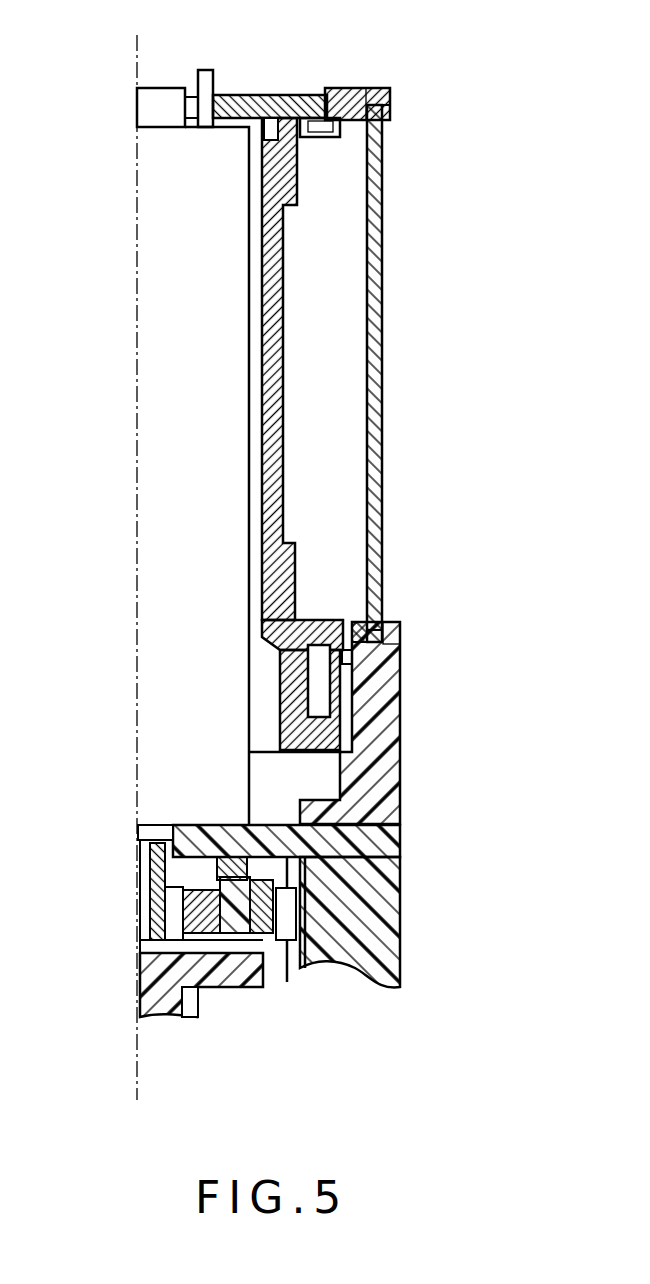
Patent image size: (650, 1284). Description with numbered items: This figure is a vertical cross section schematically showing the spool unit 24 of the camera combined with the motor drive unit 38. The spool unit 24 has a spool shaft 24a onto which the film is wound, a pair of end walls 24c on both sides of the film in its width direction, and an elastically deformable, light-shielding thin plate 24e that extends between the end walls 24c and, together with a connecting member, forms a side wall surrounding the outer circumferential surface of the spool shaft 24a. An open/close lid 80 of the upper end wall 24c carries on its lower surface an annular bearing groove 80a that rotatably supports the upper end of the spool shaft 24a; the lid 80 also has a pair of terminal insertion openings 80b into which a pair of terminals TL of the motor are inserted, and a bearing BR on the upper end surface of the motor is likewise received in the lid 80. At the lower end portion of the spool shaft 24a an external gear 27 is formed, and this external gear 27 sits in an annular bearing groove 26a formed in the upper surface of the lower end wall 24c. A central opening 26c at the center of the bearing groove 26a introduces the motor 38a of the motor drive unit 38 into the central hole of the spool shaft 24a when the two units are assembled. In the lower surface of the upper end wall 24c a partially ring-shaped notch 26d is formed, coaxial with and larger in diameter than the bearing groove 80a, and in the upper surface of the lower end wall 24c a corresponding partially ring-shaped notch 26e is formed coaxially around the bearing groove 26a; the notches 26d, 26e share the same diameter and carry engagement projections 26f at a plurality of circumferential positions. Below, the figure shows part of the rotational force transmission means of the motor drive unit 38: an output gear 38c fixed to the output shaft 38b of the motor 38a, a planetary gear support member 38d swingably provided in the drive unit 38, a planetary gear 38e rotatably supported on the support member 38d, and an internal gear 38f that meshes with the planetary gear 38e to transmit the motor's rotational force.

The terminals TL is at (201, 95).
The bearing BR is at (157, 88).
The open/close lid 80 is at (273, 94).
The annular bearing groove 80a is at (314, 134).
The terminal insertion openings 80b is at (220, 96).
The partially ring-shaped notch 26d is at (355, 88).
The end walls 24c is at (378, 92).
The engagement projections 26f is at (391, 112).
The motor 38a is at (148, 283).
The spool shaft 24a is at (284, 292).
The thin plate 24e is at (380, 368).
The partially ring-shaped notch 26e is at (352, 638).
The annular bearing groove 26a is at (386, 645).
The external gear 27 is at (352, 664).
The spool unit 24 is at (417, 728).
The central opening 26c is at (290, 722).
The output shaft 38b is at (150, 878).
The output gear 38c is at (150, 925).
The motor drive unit 38 is at (415, 897).
The planetary gear 38e is at (205, 940).
The internal gear 38f is at (300, 960).
The planetary gear support member 38d is at (168, 1010).